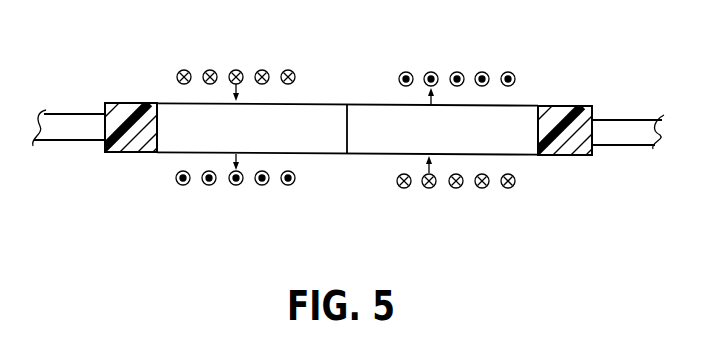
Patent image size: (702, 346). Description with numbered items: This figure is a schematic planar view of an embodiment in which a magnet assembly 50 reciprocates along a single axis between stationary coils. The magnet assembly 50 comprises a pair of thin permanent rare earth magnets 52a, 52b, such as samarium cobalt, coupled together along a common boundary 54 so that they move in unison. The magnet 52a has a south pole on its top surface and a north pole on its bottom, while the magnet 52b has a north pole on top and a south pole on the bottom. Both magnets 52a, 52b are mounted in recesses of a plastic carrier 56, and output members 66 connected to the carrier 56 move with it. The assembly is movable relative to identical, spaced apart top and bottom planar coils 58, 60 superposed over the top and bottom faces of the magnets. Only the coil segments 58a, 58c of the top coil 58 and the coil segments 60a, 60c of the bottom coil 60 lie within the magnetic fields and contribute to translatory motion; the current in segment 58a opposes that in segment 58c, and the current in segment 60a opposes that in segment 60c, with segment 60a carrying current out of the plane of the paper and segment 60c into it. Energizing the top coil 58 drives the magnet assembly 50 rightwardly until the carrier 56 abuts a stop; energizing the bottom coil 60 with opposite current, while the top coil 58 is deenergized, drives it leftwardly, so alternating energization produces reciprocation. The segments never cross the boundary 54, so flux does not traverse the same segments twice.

The magnet assembly 50 is at (100, 154).
The permanent magnet 52a is at (325, 112).
The permanent magnet 52b is at (515, 108).
The common boundary 54 is at (349, 140).
The plastic carrier 56 is at (573, 107).
The top planar coil 58 is at (312, 59).
The coil segment 58a is at (210, 70).
The coil segment 58c is at (457, 72).
The bottom planar coil 60 is at (348, 198).
The coil segment 60a is at (236, 186).
The coil segment 60c is at (456, 189).
The output member 66 is at (68, 114).